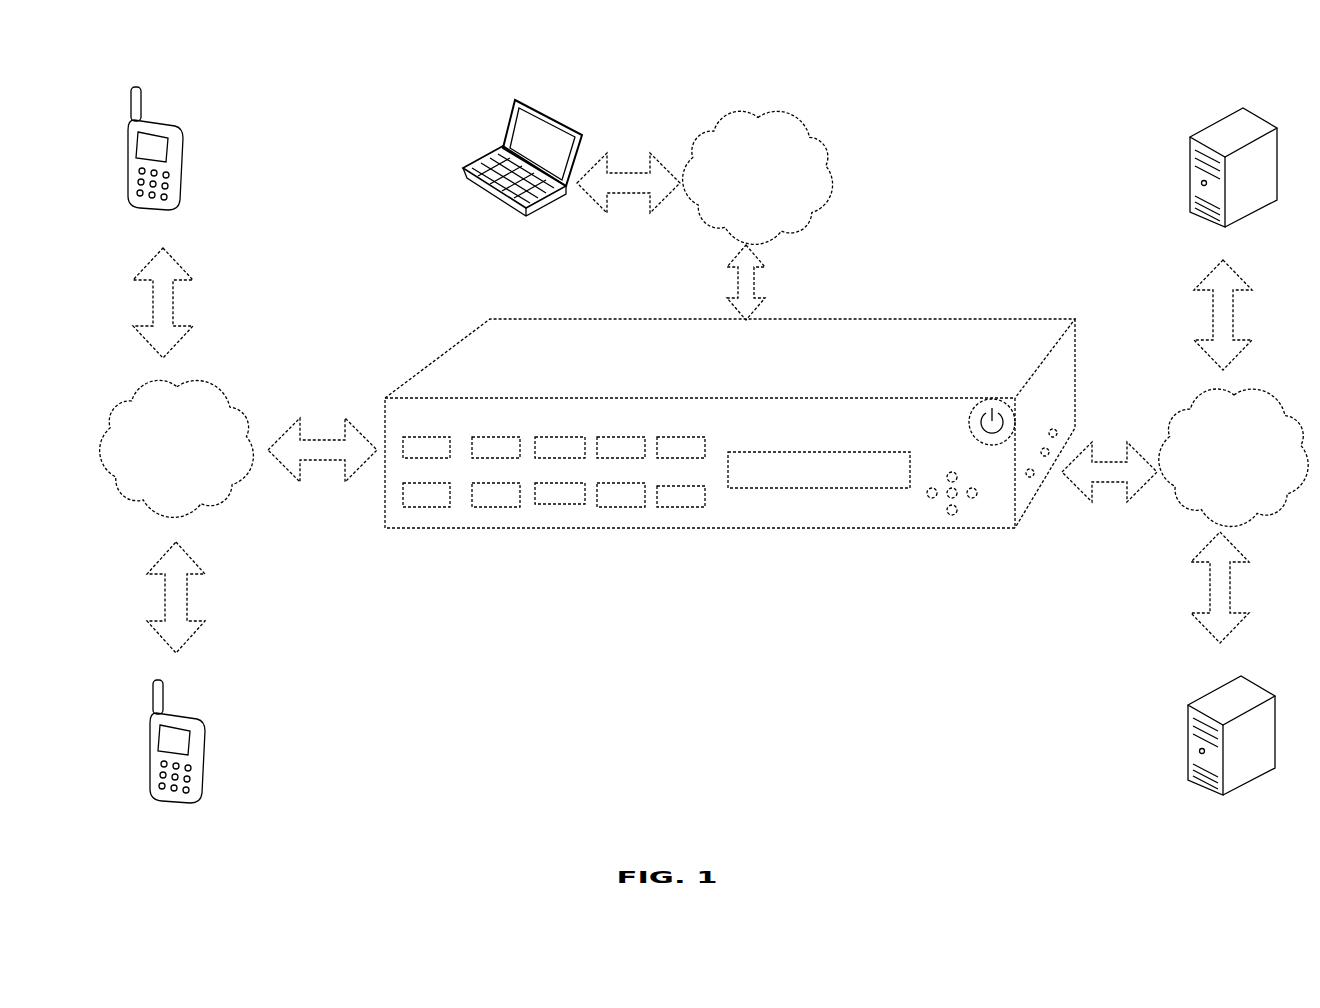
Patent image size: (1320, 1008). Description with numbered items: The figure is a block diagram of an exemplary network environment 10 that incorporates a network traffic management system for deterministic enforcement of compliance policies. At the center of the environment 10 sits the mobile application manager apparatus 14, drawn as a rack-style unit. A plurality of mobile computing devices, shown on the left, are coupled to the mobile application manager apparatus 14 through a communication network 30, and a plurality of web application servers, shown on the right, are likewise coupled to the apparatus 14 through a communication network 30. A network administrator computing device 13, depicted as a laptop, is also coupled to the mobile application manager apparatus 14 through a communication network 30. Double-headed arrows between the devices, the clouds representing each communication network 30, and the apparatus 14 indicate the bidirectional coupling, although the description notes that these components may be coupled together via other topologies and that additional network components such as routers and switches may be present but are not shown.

The network environment 10 is at (963, 148).
The network administrator computing device 13 is at (538, 207).
The mobile application manager apparatus 14 is at (718, 528).
The communication network 30 is at (704, 318).